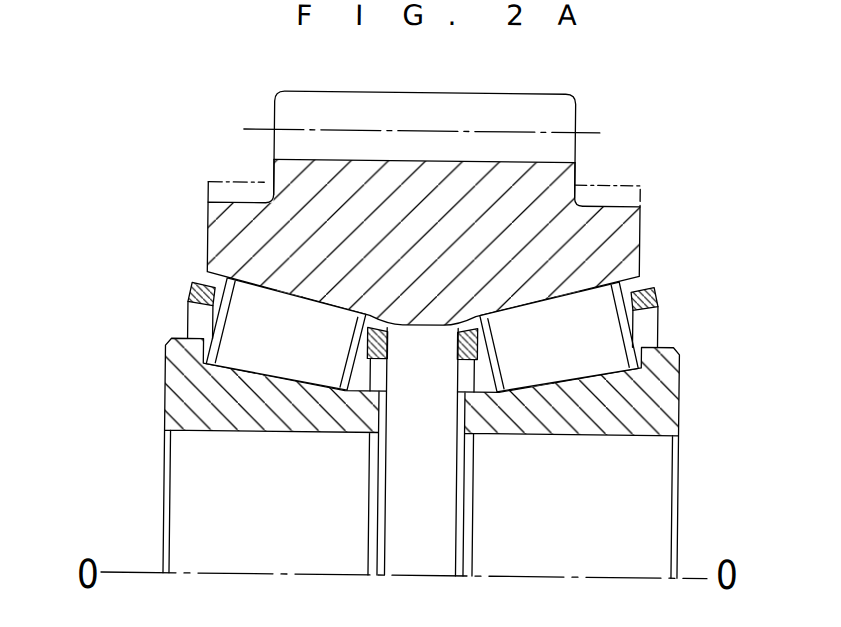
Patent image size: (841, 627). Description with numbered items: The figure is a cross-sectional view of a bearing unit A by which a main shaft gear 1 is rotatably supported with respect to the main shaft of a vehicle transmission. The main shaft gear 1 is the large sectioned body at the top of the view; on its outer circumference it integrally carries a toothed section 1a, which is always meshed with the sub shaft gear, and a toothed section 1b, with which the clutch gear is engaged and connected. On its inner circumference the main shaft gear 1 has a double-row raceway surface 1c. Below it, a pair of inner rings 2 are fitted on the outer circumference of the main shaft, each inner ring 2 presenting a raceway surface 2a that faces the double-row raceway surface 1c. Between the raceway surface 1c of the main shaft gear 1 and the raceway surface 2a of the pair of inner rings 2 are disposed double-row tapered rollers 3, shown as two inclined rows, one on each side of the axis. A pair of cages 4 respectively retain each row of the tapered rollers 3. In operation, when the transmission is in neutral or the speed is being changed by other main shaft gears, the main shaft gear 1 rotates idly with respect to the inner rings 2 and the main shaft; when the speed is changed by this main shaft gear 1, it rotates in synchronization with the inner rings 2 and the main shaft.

The bearing unit A is at (128, 162).
The main shaft gear 1 is at (224, 215).
The toothed section 1a is at (283, 112).
The toothed section 1b is at (614, 195).
The double-row raceway surface 1c is at (277, 290).
The inner ring 2 is at (178, 416).
The raceway surface 2a is at (265, 365).
The tapered roller 3 is at (227, 334).
The cage 4 is at (197, 294).